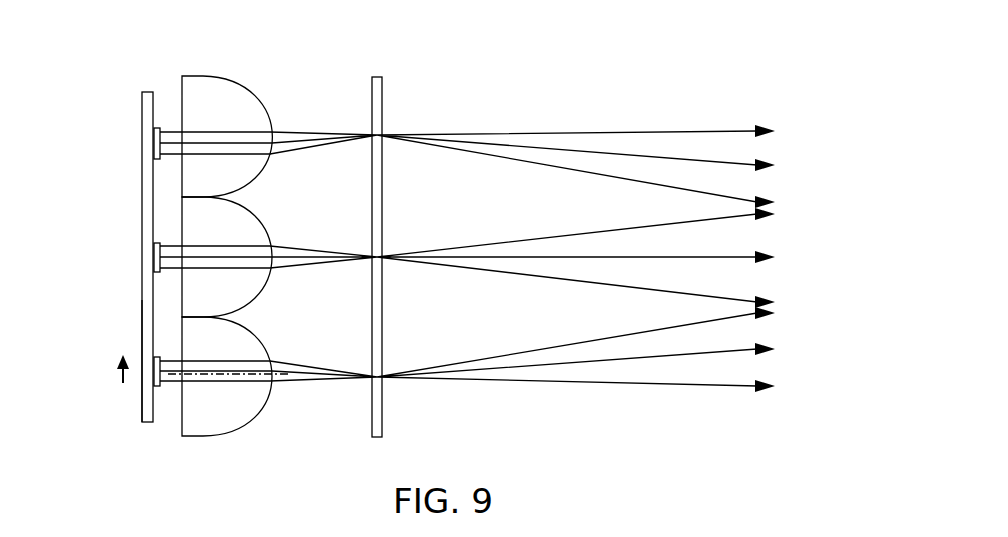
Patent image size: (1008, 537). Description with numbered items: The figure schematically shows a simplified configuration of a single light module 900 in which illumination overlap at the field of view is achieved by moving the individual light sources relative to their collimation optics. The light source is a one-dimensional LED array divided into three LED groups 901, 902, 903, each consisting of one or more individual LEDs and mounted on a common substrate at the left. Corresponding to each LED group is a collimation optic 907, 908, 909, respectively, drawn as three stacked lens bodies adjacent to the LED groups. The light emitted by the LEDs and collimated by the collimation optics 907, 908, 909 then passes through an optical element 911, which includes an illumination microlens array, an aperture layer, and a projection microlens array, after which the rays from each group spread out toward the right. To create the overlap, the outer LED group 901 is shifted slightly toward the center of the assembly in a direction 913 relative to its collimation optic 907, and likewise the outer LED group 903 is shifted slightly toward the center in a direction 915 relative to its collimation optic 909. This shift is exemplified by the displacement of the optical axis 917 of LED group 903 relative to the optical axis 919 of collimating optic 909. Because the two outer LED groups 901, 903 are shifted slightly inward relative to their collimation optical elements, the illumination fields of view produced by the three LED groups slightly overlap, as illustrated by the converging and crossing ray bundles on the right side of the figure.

The light module 900 is at (476, 70).
The LED group 901 is at (152, 122).
The LED group 902 is at (157, 256).
The LED group 903 is at (156, 392).
The collimation optic 907 is at (235, 100).
The collimation optic 908 is at (248, 236).
The collimation optic 909 is at (248, 405).
The optical element 911 is at (379, 77).
The direction 913 is at (122, 130).
The direction 915 is at (115, 376).
The optical axis 917 is at (141, 371).
The optical axis 919 is at (225, 377).